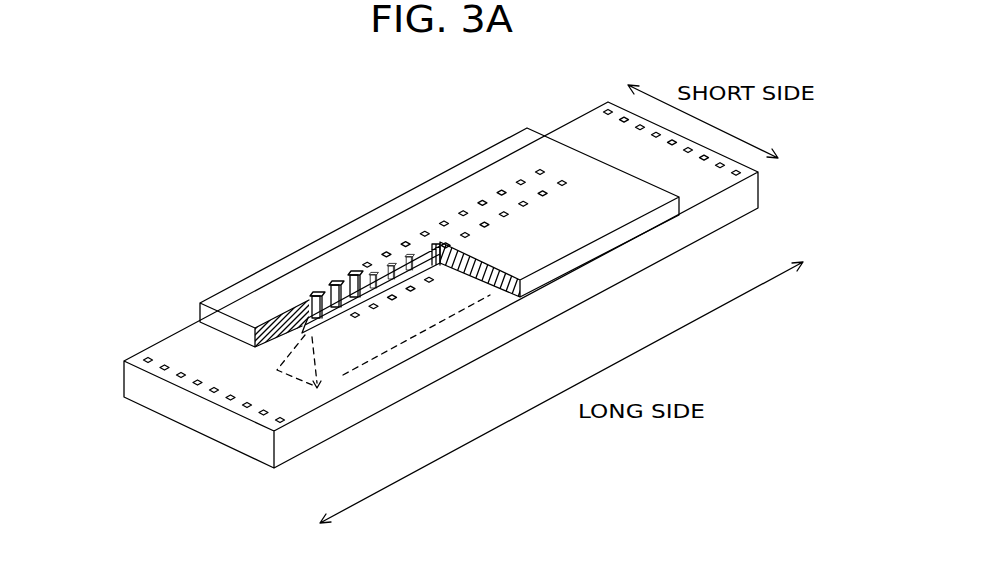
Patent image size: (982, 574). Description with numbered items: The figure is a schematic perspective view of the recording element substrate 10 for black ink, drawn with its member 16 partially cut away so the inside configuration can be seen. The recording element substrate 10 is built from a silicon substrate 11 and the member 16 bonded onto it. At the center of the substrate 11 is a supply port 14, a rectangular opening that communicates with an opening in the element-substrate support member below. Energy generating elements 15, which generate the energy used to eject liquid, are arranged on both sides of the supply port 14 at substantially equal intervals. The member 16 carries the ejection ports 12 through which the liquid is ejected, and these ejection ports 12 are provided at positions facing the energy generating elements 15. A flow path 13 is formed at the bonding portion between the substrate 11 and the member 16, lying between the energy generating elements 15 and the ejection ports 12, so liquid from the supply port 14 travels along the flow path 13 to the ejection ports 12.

The recording element substrate 10 is at (414, 146).
The substrate 11 is at (707, 225).
The ejection ports 12 is at (363, 266).
The flow path 13 is at (391, 300).
The supply port 14 is at (422, 286).
The energy generating elements 15 is at (318, 318).
The member 16 is at (487, 167).